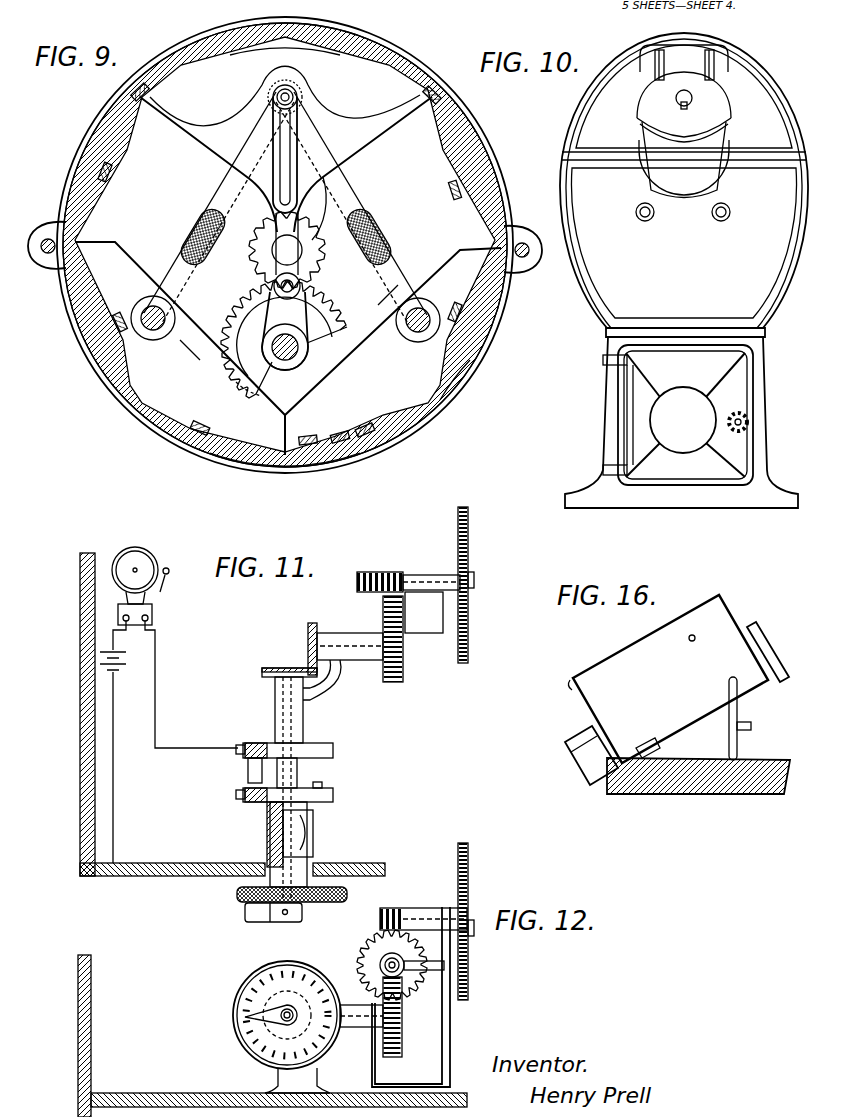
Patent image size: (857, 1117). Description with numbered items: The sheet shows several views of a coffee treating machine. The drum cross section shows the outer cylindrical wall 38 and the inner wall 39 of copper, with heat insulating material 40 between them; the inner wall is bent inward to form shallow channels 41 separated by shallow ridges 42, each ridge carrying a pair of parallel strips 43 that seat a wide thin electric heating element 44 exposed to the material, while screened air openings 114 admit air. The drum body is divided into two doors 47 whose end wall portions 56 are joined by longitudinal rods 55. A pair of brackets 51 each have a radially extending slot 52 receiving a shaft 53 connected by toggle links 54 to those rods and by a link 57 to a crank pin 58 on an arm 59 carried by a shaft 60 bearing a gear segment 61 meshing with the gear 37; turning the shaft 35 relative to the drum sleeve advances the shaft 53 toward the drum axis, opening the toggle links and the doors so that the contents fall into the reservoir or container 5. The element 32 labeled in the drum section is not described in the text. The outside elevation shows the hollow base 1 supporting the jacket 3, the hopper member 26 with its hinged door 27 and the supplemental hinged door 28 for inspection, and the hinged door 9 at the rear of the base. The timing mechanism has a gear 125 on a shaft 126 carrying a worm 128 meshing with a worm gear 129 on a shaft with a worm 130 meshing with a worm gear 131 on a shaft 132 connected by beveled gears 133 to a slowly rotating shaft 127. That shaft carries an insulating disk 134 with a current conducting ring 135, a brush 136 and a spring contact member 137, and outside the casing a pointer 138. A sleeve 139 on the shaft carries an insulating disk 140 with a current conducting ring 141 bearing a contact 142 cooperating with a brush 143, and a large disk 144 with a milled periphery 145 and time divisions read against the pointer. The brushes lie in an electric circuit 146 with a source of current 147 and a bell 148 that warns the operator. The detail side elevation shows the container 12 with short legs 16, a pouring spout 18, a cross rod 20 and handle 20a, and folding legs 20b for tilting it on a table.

In FIG. 10, the hollow base 1 is at (757, 395).
In FIG. 10, the jacket 3 is at (678, 369).
In FIG. 10, the hinged door 9 is at (690, 462).
In FIG. 10, the hopper member 26 is at (683, 171).
In FIG. 10, the hinged door 27 is at (712, 104).
In FIG. 10, the supplemental hinged door 28 is at (675, 100).
In FIG. 9, the frame 32 is at (288, 270).
In FIG. 9, the shaft 35 is at (266, 256).
In FIG. 9, the gear 37 is at (315, 240).
In FIG. 9, the outer cylindrical wall 38 is at (490, 176).
In FIG. 9, the inner wall 39 is at (466, 216).
In FIG. 9, the heat insulating material 40 is at (365, 450).
In FIG. 9, the shallow channels 41 is at (402, 407).
In FIG. 9, the shallow ridges 42 is at (248, 74).
In FIG. 9, the parallel strips 43 is at (340, 430).
In FIG. 9, the electric heating element 44 is at (112, 172).
In FIG. 9, the doors 47 is at (128, 412).
In FIG. 9, the brackets 51 is at (363, 164).
In FIG. 9, the radially extending slot 52 is at (300, 130).
In FIG. 9, the shaft 53 is at (300, 98).
In FIG. 9, the toggle links 54 is at (226, 198).
In FIG. 9, the longitudinal rods 55 is at (158, 331).
In FIG. 9, the end wall portions 56 is at (303, 341).
In FIG. 9, the link 57 is at (275, 166).
In FIG. 9, the crank pin 58 is at (301, 288).
In FIG. 9, the arm 59 is at (285, 331).
In FIG. 9, the shaft 60 is at (300, 349).
In FIG. 9, the gear segment 61 is at (266, 372).
In FIG. 9, the air openings 114 is at (195, 224).
In FIG. 11, the gear 125 is at (470, 626).
In FIG. 12, the gear 125 is at (470, 893).
In FIG. 12, the shaft 126 is at (472, 930).
In FIG. 11, the shaft 127 is at (297, 768).
In FIG. 12, the worm 128 is at (396, 908).
In FIG. 11, the worm gear 129 is at (368, 574).
In FIG. 12, the worm gear 129 is at (376, 950).
In FIG. 11, the worm 130 is at (398, 648).
In FIG. 12, the worm 130 is at (400, 976).
In FIG. 11, the worm gear 131 is at (395, 680).
In FIG. 12, the worm gear 131 is at (394, 1052).
In FIG. 11, the shaft 132 is at (350, 640).
In FIG. 11, the beveled gears 133 is at (302, 667).
In FIG. 11, the insulating disk 134 is at (256, 743).
In FIG. 11, the current conducting ring 135 is at (316, 750).
In FIG. 11, the brush 136 is at (240, 745).
In FIG. 11, the spring contact member 137 is at (248, 771).
In FIG. 11, the pointer 138 is at (250, 913).
In FIG. 12, the pointer 138 is at (246, 1019).
In FIG. 11, the sleeve 139 is at (275, 843).
In FIG. 11, the insulating disk 140 is at (255, 802).
In FIG. 11, the current conducting ring 141 is at (312, 797).
In FIG. 11, the contact 142 is at (323, 786).
In FIG. 11, the brush 143 is at (237, 797).
In FIG. 12, the large disk 144 is at (262, 982).
In FIG. 11, the milled periphery 145 is at (348, 894).
In FIG. 11, the electric circuit 146 is at (118, 730).
In FIG. 11, the source of current 147 is at (128, 664).
In FIG. 11, the bell 148 is at (153, 615).
In FIG. 16, the reservoir or container 5 is at (648, 633).
In FIG. 16, the container 12 is at (721, 656).
In FIG. 16, the short legs 16 is at (660, 745).
In FIG. 16, the pouring spout 18 is at (588, 730).
In FIG. 16, the cross rod 20 is at (696, 641).
In FIG. 16, the handle 20a is at (572, 690).
In FIG. 16, the folding legs 20b is at (738, 708).